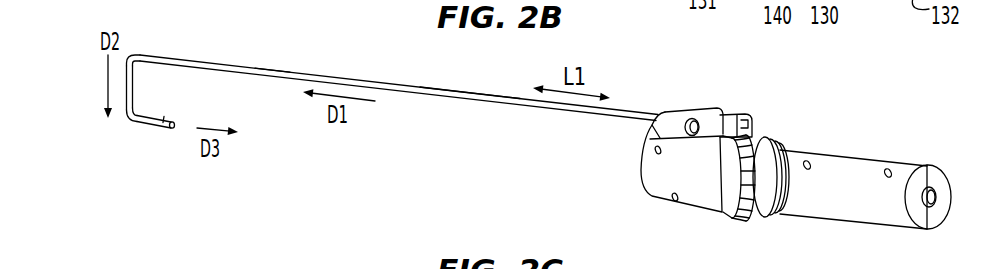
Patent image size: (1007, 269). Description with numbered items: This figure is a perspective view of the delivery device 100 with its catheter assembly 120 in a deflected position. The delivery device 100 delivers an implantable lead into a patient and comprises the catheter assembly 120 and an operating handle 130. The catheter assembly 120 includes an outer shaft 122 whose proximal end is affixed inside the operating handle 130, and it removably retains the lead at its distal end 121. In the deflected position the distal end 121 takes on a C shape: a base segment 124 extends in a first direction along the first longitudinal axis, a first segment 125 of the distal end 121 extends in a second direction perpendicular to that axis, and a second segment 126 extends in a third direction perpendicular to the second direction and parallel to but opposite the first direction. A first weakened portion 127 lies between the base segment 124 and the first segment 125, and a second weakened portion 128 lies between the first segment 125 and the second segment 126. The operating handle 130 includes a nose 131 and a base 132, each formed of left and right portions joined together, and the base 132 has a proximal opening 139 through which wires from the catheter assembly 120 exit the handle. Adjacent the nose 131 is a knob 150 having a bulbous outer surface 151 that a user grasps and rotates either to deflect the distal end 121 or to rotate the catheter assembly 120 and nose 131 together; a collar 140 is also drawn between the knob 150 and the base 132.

The delivery device 100 is at (866, 104).
The catheter assembly 120 is at (427, 96).
The distal end 121 is at (136, 85).
The outer shaft 122 is at (471, 90).
The base segment 124 is at (271, 78).
The first segment 125 is at (134, 100).
The second segment 126 is at (137, 144).
The first weakened portion 127 is at (137, 52).
The second weakened portion 128 is at (145, 112).
The operating handle 130 is at (820, 218).
The nose 131 is at (640, 170).
The base 132 is at (908, 228).
The proximal opening 139 is at (925, 186).
The collar 140 is at (772, 220).
The knob 150 is at (760, 136).
The bulbous outer surface 151 is at (745, 217).